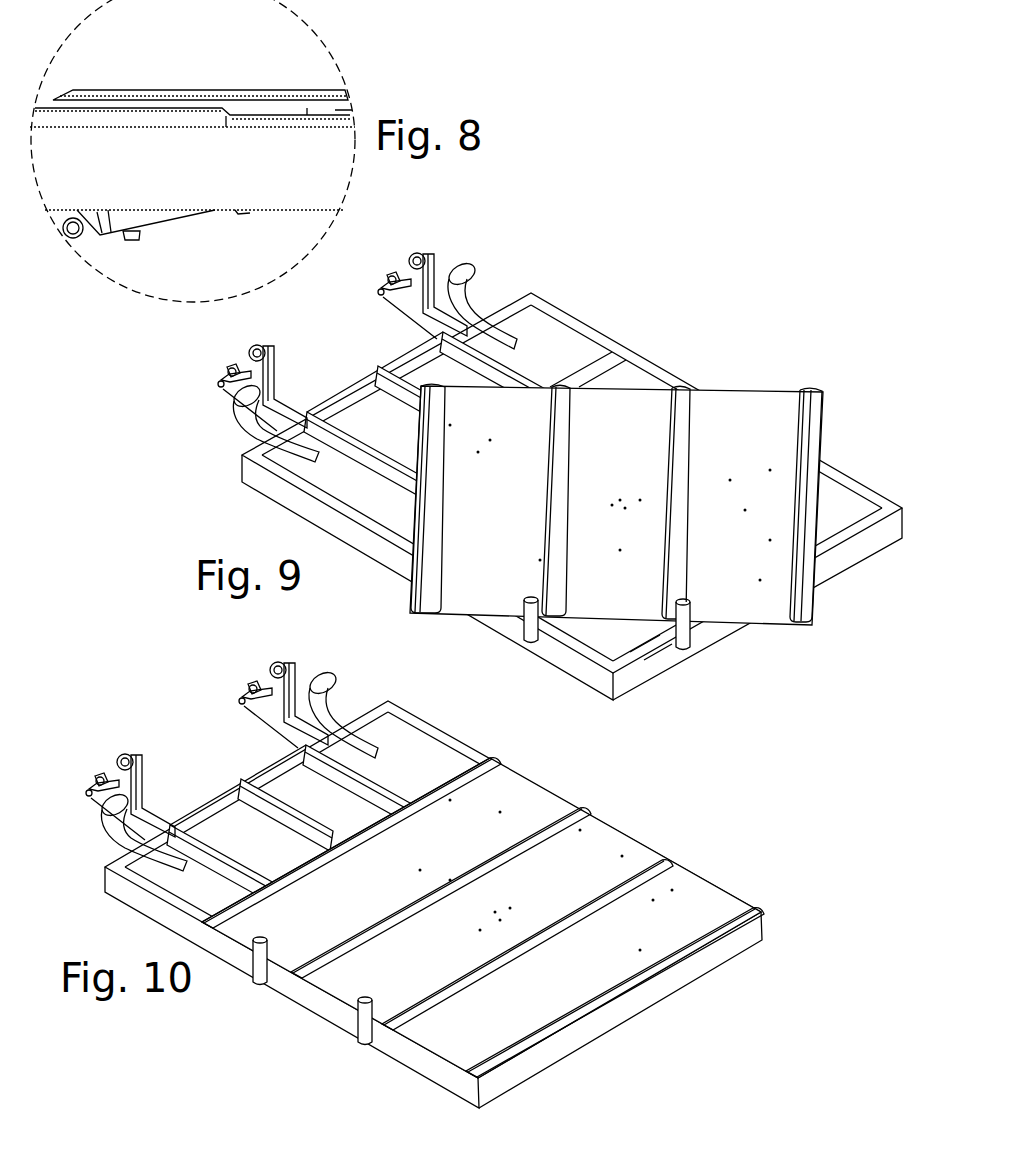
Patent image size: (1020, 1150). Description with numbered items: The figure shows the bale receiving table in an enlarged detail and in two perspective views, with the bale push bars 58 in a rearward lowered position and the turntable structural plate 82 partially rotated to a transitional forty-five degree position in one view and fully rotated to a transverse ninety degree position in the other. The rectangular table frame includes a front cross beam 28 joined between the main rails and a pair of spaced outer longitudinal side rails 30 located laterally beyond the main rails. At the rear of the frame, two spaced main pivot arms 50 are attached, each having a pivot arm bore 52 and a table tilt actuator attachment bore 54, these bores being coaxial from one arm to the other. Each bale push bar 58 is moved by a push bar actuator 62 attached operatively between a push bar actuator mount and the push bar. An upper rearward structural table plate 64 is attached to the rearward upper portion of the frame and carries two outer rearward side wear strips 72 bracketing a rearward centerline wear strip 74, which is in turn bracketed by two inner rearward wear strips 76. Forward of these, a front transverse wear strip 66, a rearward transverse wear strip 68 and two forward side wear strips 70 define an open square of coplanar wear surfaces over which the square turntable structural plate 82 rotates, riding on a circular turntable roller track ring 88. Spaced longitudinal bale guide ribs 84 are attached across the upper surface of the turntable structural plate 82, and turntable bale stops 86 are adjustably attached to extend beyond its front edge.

In FIG. 9, the front cross beam 28 is at (832, 562).
In FIG. 10, the front cross beam 28 is at (610, 1025).
In FIG. 8, the outer longitudinal side rails 30 is at (274, 205).
In FIG. 9, the outer longitudinal side rails 30 is at (276, 495).
In FIG. 10, the outer longitudinal side rails 30 is at (405, 1055).
In FIG. 9, the main pivot arms 50 is at (234, 371).
In FIG. 10, the main pivot arms 50 is at (101, 783).
In FIG. 9, the pivot arm bore 52 is at (254, 346).
In FIG. 10, the pivot arm bore 52 is at (118, 758).
In FIG. 9, the table tilt actuator attachment bore 54 is at (219, 385).
In FIG. 10, the table tilt actuator attachment bore 54 is at (87, 795).
In FIG. 9, the bale push bars 58 is at (233, 407).
In FIG. 10, the bale push bars 58 is at (98, 820).
In FIG. 8, the push bar actuators 62 is at (165, 218).
In FIG. 9, the upper rearward structural table plate 64 is at (362, 392).
In FIG. 10, the upper rearward structural table plate 64 is at (224, 795).
In FIG. 9, the front transverse wear strip 66 is at (652, 656).
In FIG. 9, the rearward transverse wear strip 68 is at (620, 357).
In FIG. 8, the forward side wear strips 70 is at (290, 125).
In FIG. 9, the forward side wear strips 70 is at (680, 384).
In FIG. 10, the forward side wear strips 70 is at (609, 989).
In FIG. 8, the outer rearward side wear strips 72 is at (185, 125).
In FIG. 9, the outer rearward side wear strips 72 is at (243, 462).
In FIG. 10, the outer rearward side wear strips 72 is at (110, 870).
In FIG. 9, the rearward centerline wear strip 74 is at (382, 366).
In FIG. 10, the rearward centerline wear strip 74 is at (246, 776).
In FIG. 9, the inner rearward wear strips 76 is at (320, 410).
In FIG. 10, the inner rearward wear strips 76 is at (178, 822).
In FIG. 8, the turntable structural plate 82 is at (243, 97).
In FIG. 9, the turntable structural plate 82 is at (486, 427).
In FIG. 10, the turntable structural plate 82 is at (406, 864).
In FIG. 8, the bale guide ribs 84 is at (135, 88).
In FIG. 9, the bale guide ribs 84 is at (438, 503).
In FIG. 10, the bale guide ribs 84 is at (240, 903).
In FIG. 9, the turntable bale stops 86 is at (524, 628).
In FIG. 10, the turntable bale stops 86 is at (253, 982).
In FIG. 8, the turntable roller track ring 88 is at (335, 110).